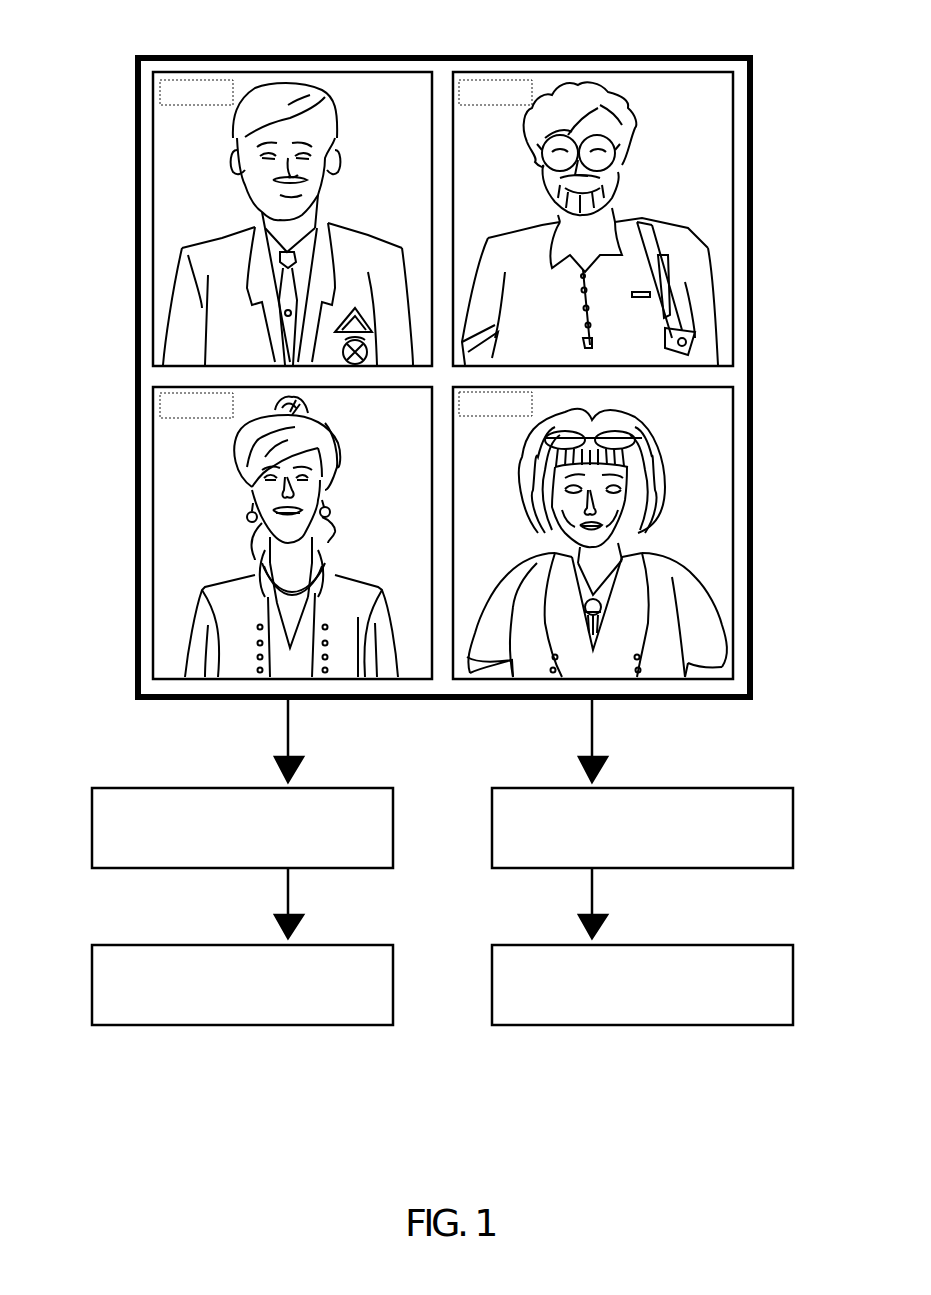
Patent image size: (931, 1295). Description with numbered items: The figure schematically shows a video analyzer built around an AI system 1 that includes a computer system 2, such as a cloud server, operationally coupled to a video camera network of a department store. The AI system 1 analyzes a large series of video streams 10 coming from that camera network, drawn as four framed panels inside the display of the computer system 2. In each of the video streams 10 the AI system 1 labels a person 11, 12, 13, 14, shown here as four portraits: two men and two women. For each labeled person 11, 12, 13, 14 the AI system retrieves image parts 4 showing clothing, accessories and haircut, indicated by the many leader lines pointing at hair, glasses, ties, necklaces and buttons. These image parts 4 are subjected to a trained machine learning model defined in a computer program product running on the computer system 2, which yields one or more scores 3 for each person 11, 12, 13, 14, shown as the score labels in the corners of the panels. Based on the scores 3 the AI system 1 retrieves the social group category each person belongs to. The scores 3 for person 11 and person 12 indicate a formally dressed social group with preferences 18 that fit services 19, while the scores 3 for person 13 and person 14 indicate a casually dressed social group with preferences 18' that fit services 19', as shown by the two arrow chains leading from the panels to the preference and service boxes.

The AI system 1 is at (129, 133).
The computer system 2 is at (688, 66).
The scores 3 is at (105, 370).
The image parts 4 is at (290, 140).
The video streams 10 is at (782, 475).
The person 11 is at (350, 227).
The person 12 is at (352, 575).
The person 13 is at (520, 222).
The person 14 is at (512, 557).
The preferences 18 is at (242, 796).
The preferences 18' is at (642, 796).
The services 19 is at (242, 1017).
The services 19' is at (642, 1017).